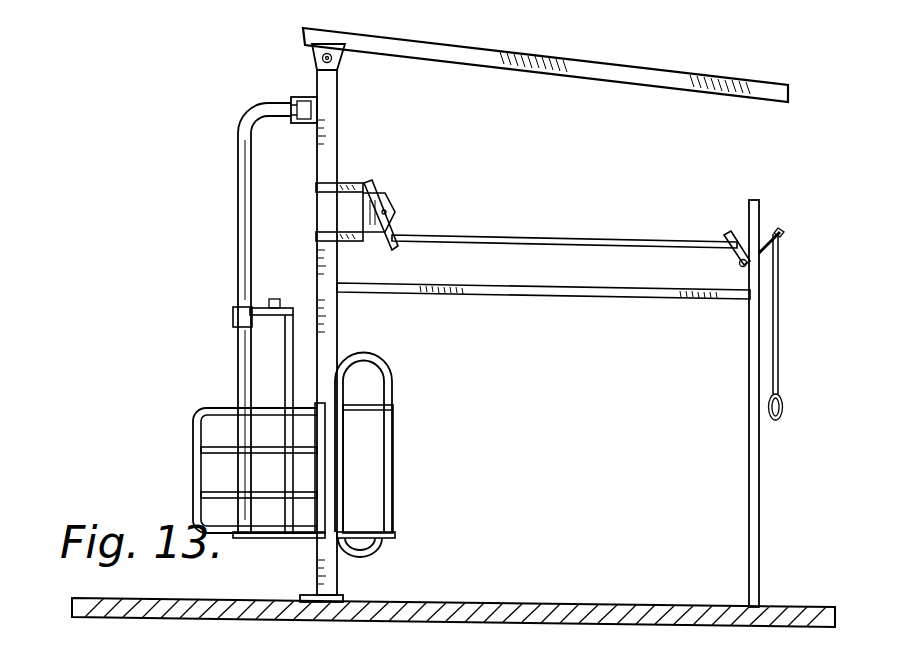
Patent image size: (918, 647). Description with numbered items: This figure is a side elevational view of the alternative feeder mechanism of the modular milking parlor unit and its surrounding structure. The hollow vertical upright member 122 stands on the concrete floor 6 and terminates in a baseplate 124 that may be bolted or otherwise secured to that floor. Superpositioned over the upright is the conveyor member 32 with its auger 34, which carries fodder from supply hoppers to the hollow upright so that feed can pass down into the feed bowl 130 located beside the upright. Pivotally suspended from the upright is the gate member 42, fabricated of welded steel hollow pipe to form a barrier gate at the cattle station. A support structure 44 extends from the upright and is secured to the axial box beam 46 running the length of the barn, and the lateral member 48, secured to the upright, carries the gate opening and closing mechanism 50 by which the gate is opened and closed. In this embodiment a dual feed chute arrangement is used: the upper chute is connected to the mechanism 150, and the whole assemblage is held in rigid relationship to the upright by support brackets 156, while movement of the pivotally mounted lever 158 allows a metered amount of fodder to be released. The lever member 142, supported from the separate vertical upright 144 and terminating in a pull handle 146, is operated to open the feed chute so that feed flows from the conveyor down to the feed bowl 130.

The concrete floor 6 is at (613, 606).
The conveyor member 32 is at (312, 47).
The auger 34 is at (340, 64).
The gate member 42 is at (222, 411).
The support structure 44 is at (238, 257).
The axial box beam 46 is at (303, 126).
The lateral member 48 is at (276, 541).
The gate opening and closing mechanism 50 is at (271, 291).
The vertical hollow upright member 122 is at (330, 336).
The baseplate 124 is at (343, 597).
The feed bowl 130 is at (378, 548).
The lever member 142 is at (728, 231).
The vertical upright 144 is at (760, 513).
The pull handle 146 is at (778, 348).
The mechanism 150 is at (399, 178).
The support brackets 156 is at (317, 231).
The lever 158 is at (389, 229).